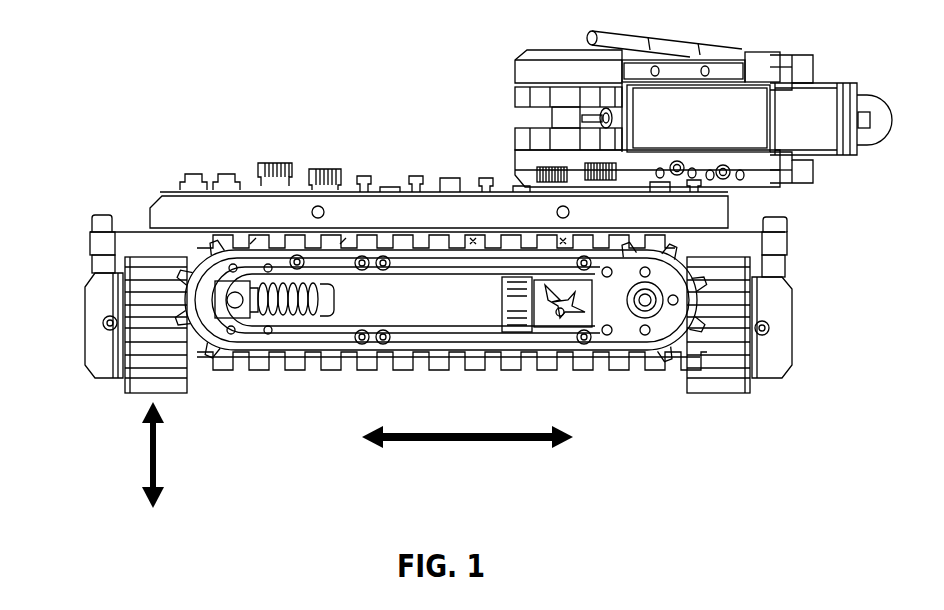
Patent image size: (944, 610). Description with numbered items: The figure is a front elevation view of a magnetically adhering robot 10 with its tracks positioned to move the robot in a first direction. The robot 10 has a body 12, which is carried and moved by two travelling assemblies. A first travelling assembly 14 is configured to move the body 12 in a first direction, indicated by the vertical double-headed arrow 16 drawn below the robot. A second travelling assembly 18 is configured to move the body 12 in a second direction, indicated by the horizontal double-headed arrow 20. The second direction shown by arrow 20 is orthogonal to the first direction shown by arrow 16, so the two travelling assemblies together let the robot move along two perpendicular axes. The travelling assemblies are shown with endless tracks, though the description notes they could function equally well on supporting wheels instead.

The magnetically adhering robot 10 is at (337, 113).
The body 12 is at (157, 188).
The first travelling assembly 14 is at (144, 292).
The arrow 16 is at (146, 459).
The second travelling assembly 18 is at (282, 352).
The arrow 20 is at (465, 437).